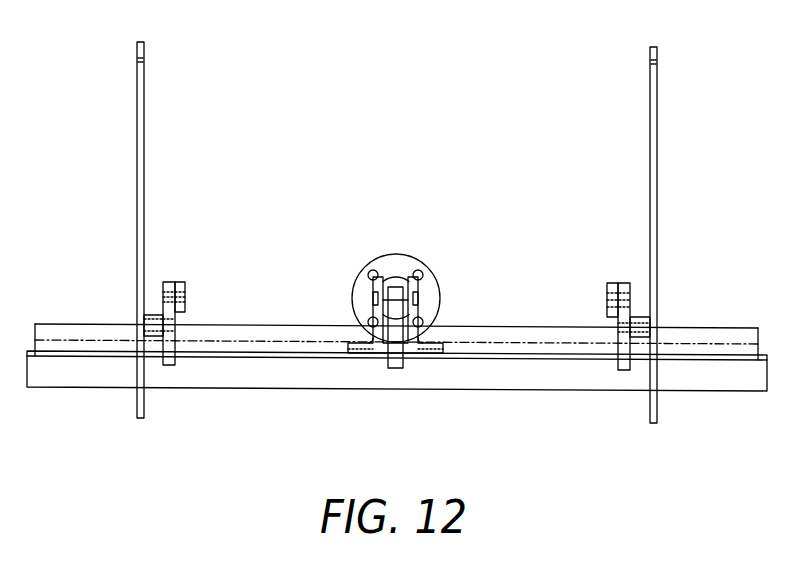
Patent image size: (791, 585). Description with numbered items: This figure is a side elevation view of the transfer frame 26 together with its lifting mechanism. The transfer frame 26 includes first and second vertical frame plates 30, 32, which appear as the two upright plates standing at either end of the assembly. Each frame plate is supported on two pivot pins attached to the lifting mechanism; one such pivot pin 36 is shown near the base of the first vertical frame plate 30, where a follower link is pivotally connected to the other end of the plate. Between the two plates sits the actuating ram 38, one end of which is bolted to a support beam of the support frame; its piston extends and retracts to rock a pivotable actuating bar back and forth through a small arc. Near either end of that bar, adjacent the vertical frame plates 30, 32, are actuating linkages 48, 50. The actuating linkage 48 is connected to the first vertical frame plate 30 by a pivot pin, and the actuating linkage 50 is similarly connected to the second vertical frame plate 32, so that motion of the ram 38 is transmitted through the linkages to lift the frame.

The transfer frame 26 is at (440, 232).
The first vertical frame plate 30 is at (145, 98).
The second vertical frame plate 32 is at (657, 108).
The pivot pin 36 is at (150, 315).
The actuating ram 38 is at (405, 255).
The actuating linkage 48 is at (166, 283).
The actuating linkage 50 is at (630, 308).